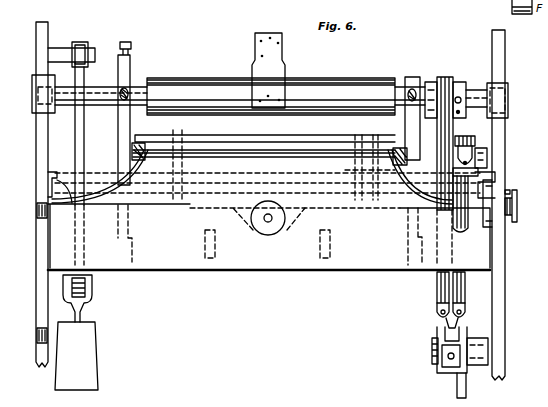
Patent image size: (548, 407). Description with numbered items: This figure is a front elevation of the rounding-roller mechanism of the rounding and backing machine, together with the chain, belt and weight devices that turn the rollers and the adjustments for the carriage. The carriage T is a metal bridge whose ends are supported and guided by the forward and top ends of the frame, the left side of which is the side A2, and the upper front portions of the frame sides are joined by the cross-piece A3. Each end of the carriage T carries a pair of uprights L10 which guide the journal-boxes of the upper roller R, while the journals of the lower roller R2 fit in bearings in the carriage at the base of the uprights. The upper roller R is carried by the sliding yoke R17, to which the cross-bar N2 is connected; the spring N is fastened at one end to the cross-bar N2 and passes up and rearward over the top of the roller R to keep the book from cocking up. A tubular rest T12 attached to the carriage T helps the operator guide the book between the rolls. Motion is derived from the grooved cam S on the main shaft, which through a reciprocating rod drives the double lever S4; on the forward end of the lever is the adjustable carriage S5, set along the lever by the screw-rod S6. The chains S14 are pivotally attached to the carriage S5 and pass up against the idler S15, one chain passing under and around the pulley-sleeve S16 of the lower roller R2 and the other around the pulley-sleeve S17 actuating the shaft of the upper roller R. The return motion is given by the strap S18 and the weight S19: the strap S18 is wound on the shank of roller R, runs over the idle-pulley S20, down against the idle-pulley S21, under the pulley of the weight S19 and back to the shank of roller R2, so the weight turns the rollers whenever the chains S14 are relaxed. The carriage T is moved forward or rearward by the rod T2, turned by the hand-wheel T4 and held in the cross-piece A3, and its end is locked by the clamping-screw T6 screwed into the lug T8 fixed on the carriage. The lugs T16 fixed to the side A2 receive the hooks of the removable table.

The uprights L10 is at (41, 128).
The idle-pulley S20 is at (89, 51).
The strap S18 is at (86, 131).
The sliding yoke R17 is at (132, 66).
The grooved cam S is at (412, 127).
The upper roller R is at (190, 78).
The cross-bar N2 is at (271, 96).
The spring N is at (256, 52).
The lower roller R2 is at (197, 137).
The tubular rest T12 is at (316, 140).
The left side of the frame A2 is at (40, 271).
The cross-piece A3 is at (417, 238).
The carriage T is at (98, 176).
The idler S15 is at (422, 205).
The hand-wheel T4 is at (268, 218).
The rod T2 is at (268, 220).
The lugs T16 is at (37, 208).
The weight S19 is at (76, 332).
The pulley-sleeve S17 is at (458, 82).
The pulley-sleeve S16 is at (476, 151).
The lug T8 is at (490, 206).
The clamping-screw T6 is at (520, 209).
The idle-pulley S21 is at (524, 190).
The chains S14 is at (438, 284).
The adjustable carriage S5 is at (447, 374).
The screw-rod S6 is at (448, 358).
The double lever S4 is at (433, 351).